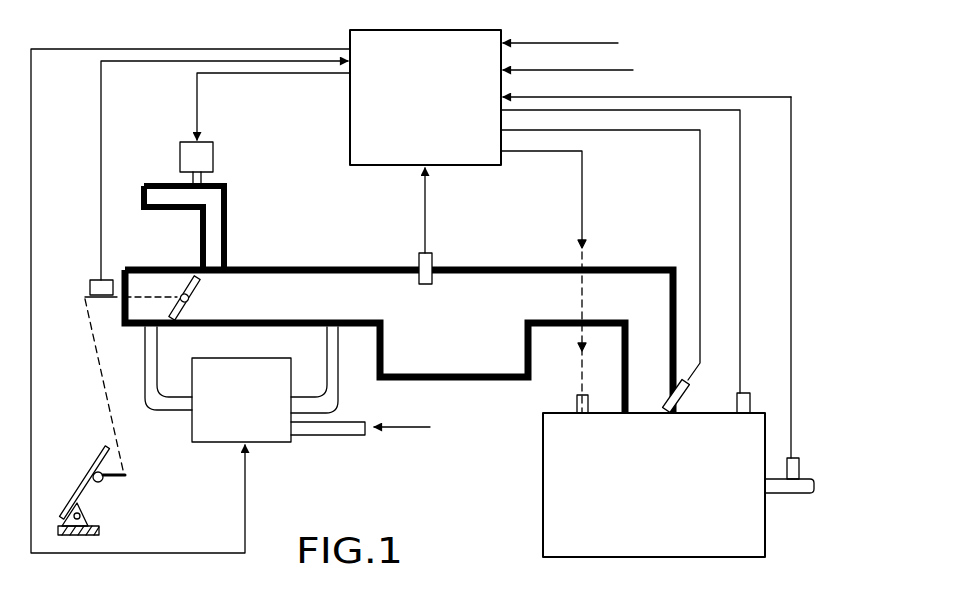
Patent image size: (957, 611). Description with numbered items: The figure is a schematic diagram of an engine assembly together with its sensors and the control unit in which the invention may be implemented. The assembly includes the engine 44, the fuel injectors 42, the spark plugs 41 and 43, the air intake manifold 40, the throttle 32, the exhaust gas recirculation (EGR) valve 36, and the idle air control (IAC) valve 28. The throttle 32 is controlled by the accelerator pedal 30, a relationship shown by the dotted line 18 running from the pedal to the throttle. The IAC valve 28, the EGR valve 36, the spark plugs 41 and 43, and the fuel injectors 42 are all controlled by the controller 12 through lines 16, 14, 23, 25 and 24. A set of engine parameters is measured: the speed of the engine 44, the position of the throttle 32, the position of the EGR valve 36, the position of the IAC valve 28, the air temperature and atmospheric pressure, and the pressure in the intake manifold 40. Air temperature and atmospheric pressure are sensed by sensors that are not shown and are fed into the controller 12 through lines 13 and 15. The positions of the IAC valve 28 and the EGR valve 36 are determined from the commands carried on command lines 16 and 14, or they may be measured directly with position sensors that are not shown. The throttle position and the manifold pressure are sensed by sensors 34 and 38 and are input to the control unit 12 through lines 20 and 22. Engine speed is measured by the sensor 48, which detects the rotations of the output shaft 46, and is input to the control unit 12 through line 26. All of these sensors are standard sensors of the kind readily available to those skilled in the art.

The controller 12 is at (385, 168).
The line 13 is at (575, 43).
The line 14 is at (32, 258).
The line 15 is at (612, 70).
The line 16 is at (197, 97).
The dotted line 18 is at (97, 355).
The line 20 is at (100, 150).
The line 22 is at (425, 202).
The line 23 is at (582, 225).
The line 24 is at (700, 155).
The line 25 is at (735, 202).
The line 26 is at (792, 288).
The idle air control (IAC) valve 28 is at (193, 158).
The accelerator pedal 30 is at (99, 530).
The throttle 32 is at (182, 313).
The sensor 34 is at (105, 282).
The exhaust gas recirculation (EGR) valve 36 is at (253, 360).
The sensor 38 is at (432, 260).
The air intake manifold 40 is at (460, 357).
The spark plug 41 is at (577, 400).
The fuel injectors 42 is at (682, 393).
The spark plug 43 is at (745, 400).
The engine 44 is at (565, 487).
The output shaft 46 is at (785, 494).
The sensor 48 is at (795, 470).